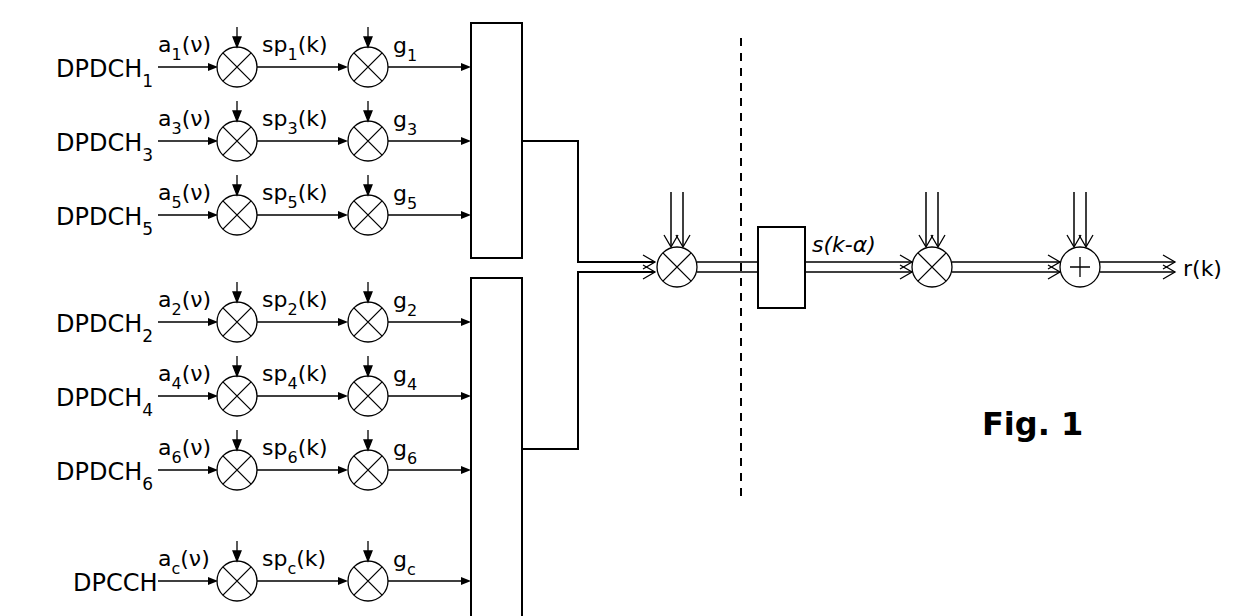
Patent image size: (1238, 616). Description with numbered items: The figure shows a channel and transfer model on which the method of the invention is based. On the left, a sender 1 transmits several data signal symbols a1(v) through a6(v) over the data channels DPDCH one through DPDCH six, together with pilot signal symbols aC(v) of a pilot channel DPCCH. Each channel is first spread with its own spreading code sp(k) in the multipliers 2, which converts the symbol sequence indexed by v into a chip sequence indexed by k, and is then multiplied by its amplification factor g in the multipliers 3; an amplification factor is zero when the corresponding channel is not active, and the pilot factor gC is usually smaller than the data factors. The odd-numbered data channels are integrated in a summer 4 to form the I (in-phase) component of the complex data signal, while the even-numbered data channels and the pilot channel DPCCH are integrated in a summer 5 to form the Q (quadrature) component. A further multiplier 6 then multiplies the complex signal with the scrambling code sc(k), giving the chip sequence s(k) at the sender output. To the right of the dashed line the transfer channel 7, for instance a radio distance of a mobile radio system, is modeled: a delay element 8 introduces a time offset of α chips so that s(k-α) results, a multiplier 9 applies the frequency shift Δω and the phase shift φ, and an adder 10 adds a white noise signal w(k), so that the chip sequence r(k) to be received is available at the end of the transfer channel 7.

The sender 1 is at (619, 132).
The multipliers 2 is at (288, 597).
The multipliers 3 is at (418, 600).
The summer 4 is at (496, 140).
The summer 5 is at (496, 447).
The multiplier 6 is at (678, 285).
The transfer channel 7 is at (1041, 130).
The delay element 8 is at (787, 298).
The multiplier 9 is at (950, 284).
The adder 10 is at (1098, 284).